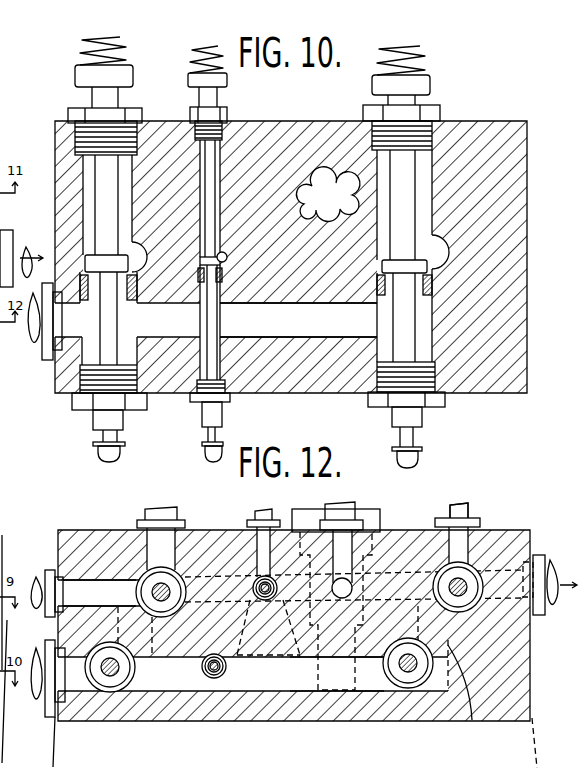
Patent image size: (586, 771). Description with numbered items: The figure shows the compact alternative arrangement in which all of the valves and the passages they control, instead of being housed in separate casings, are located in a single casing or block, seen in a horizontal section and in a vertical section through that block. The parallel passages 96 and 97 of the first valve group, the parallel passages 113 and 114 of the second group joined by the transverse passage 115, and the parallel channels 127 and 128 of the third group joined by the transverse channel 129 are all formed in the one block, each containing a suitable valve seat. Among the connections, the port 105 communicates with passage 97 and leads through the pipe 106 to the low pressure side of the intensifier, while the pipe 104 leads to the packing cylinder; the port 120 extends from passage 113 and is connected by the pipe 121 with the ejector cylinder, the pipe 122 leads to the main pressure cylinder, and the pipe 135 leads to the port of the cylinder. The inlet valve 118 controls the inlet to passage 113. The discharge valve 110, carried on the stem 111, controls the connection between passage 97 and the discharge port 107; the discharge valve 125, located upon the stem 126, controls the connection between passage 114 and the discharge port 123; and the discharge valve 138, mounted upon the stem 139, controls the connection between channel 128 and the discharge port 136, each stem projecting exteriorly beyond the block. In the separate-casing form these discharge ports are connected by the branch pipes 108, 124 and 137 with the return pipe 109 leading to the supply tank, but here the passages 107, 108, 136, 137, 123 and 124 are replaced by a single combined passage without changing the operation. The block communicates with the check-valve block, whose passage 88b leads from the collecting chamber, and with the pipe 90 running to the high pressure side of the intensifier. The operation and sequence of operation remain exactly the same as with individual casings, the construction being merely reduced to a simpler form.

In FIG. 10, the passage 88b is at (328, 194).
In FIG. 12, the pipe 90 is at (340, 502).
In FIG. 12, the passage 96 is at (150, 572).
In FIG. 10, the passage 97 is at (83, 205).
In FIG. 12, the passage 97 is at (112, 692).
In FIG. 12, the pipe 104 is at (164, 504).
In FIG. 12, the port 105 is at (99, 593).
In FIG. 12, the pipe 106 is at (38, 577).
In FIG. 10, the discharge port 107 is at (241, 311).
In FIG. 12, the discharge port 107 is at (305, 665).
In FIG. 10, the branch pipe 108 is at (241, 329).
In FIG. 12, the branch pipe 108 is at (305, 683).
In FIG. 10, the return pipe 109 is at (40, 348).
In FIG. 12, the return pipe 109 is at (42, 705).
In FIG. 10, the discharge valve 110 is at (108, 277).
In FIG. 10, the stem 111 is at (103, 436).
In FIG. 10, the passage 113 is at (30, 345).
In FIG. 12, the passage 113 is at (450, 568).
In FIG. 10, the passage 114 is at (425, 212).
In FIG. 12, the passage 114 is at (408, 691).
In FIG. 12, the transverse passage 115 is at (472, 720).
In FIG. 10, the inlet valve 118 is at (10, 247).
In FIG. 12, the port 120 is at (467, 545).
In FIG. 12, the pipe 121 is at (462, 499).
In FIG. 10, the pipe 122 is at (27, 247).
In FIG. 12, the pipe 122 is at (545, 562).
In FIG. 10, the discharge port 123 is at (338, 311).
In FIG. 12, the discharge port 123 is at (367, 665).
In FIG. 10, the branch pipe 124 is at (338, 329).
In FIG. 12, the branch pipe 124 is at (367, 683).
In FIG. 10, the discharge valve 125 is at (404, 277).
In FIG. 10, the stem 126 is at (413, 435).
In FIG. 12, the channel 127 is at (260, 578).
In FIG. 10, the channel 128 is at (200, 135).
In FIG. 12, the channel 128 is at (216, 680).
In FIG. 12, the transverse channel 129 is at (268, 667).
In FIG. 12, the pipe 135 is at (264, 509).
In FIG. 10, the discharge port 136 is at (284, 311).
In FIG. 12, the discharge port 136 is at (335, 665).
In FIG. 10, the branch pipe 137 is at (284, 329).
In FIG. 12, the branch pipe 137 is at (335, 683).
In FIG. 10, the discharge valve 138 is at (200, 262).
In FIG. 10, the stem 139 is at (208, 435).